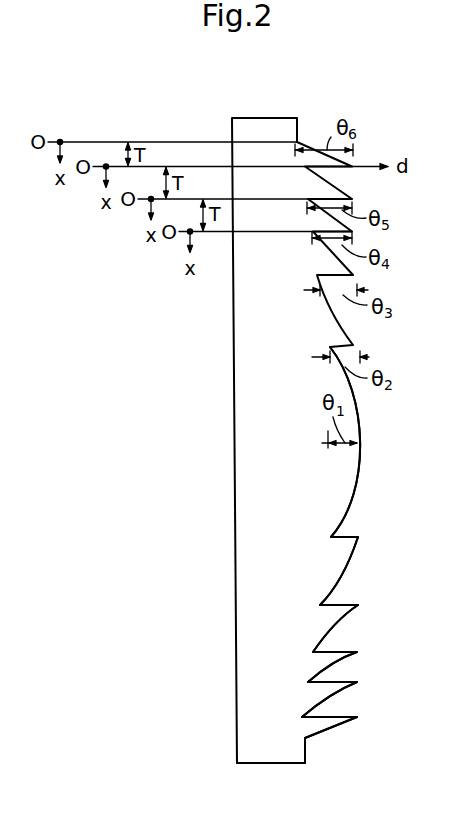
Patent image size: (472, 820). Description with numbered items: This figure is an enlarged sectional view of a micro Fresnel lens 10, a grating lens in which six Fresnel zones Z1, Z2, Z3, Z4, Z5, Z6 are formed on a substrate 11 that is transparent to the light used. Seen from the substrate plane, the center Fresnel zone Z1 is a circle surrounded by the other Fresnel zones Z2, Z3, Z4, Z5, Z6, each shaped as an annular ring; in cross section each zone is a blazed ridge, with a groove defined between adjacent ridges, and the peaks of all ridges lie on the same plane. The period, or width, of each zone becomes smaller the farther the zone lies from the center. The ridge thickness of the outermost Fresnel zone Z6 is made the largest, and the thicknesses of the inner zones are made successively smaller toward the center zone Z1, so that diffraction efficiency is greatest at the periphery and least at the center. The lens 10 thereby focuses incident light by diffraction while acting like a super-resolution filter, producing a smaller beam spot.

The micro Fresnel lens 10 is at (240, 113).
The substrate 11 is at (252, 745).
The center Fresnel zone Z1 is at (350, 478).
The Fresnel zone Z2 is at (345, 562).
The Fresnel zone Z3 is at (342, 618).
The Fresnel zone Z4 is at (340, 662).
The Fresnel zone Z5 is at (342, 693).
The outermost Fresnel zone Z6 is at (337, 722).